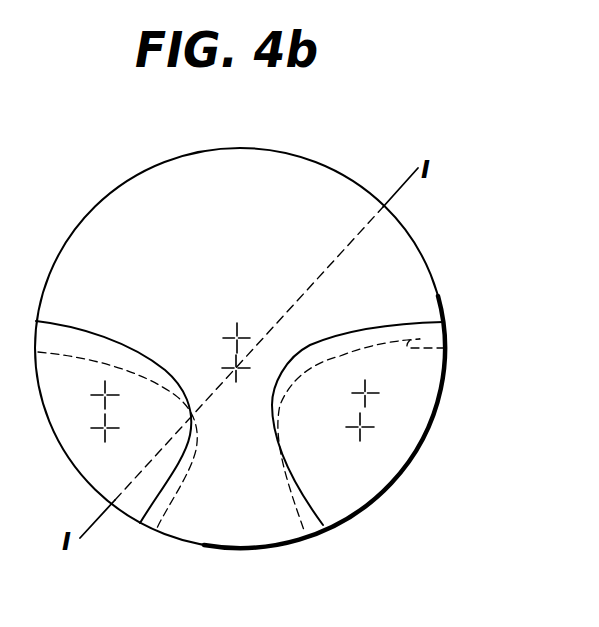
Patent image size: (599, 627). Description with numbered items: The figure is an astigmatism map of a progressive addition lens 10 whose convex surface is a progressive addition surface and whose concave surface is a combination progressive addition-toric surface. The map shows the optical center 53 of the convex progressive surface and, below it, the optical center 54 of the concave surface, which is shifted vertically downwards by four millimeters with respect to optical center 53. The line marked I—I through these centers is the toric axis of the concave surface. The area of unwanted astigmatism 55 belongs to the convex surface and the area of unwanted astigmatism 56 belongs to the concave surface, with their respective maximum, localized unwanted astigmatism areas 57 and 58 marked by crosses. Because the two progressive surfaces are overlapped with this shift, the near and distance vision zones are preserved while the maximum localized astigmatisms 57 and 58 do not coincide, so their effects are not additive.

The progressive addition lens 10 is at (362, 148).
The optical center 53 is at (237, 325).
The optical center 54 is at (235, 360).
The area of unwanted astigmatism 55 is at (393, 323).
The area of unwanted astigmatism 56 is at (420, 339).
The maximum, localized unwanted astigmatism area 57 is at (364, 387).
The maximum, localized unwanted astigmatism area 58 is at (359, 436).